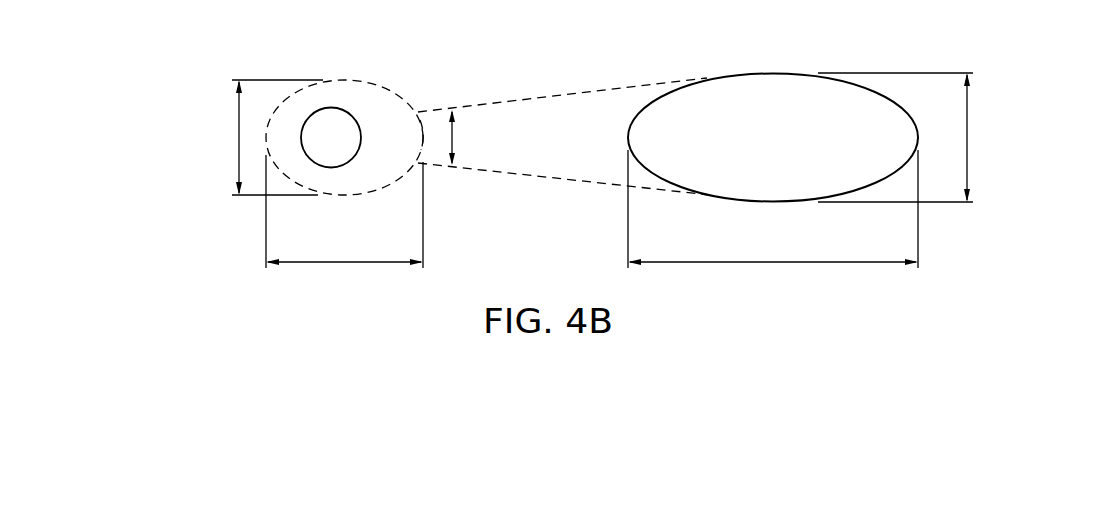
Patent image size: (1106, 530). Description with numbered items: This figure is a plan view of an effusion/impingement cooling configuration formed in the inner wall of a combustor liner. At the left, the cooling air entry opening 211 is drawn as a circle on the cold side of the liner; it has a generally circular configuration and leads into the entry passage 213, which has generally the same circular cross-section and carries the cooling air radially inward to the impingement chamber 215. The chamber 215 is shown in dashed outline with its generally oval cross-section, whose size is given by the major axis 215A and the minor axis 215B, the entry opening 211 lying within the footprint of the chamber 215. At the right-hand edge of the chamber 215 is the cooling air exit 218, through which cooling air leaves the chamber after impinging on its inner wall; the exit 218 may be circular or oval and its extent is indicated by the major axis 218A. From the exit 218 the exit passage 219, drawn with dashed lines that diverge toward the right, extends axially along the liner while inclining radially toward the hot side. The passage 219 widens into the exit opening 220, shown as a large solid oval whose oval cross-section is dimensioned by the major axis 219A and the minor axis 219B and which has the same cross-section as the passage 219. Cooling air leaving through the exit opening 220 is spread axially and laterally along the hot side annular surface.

The cooling air entry opening 211 is at (332, 168).
The entry passage 213 is at (324, 124).
The impingement chamber 215 is at (360, 193).
The major axis 215A is at (345, 263).
The minor axis 215B is at (238, 138).
The cooling air exit 218 is at (410, 125).
The major axis 218A is at (458, 140).
The exit passage 219 is at (605, 92).
The major axis 219A is at (783, 265).
The minor axis 219B is at (968, 138).
The exit opening 220 is at (785, 73).